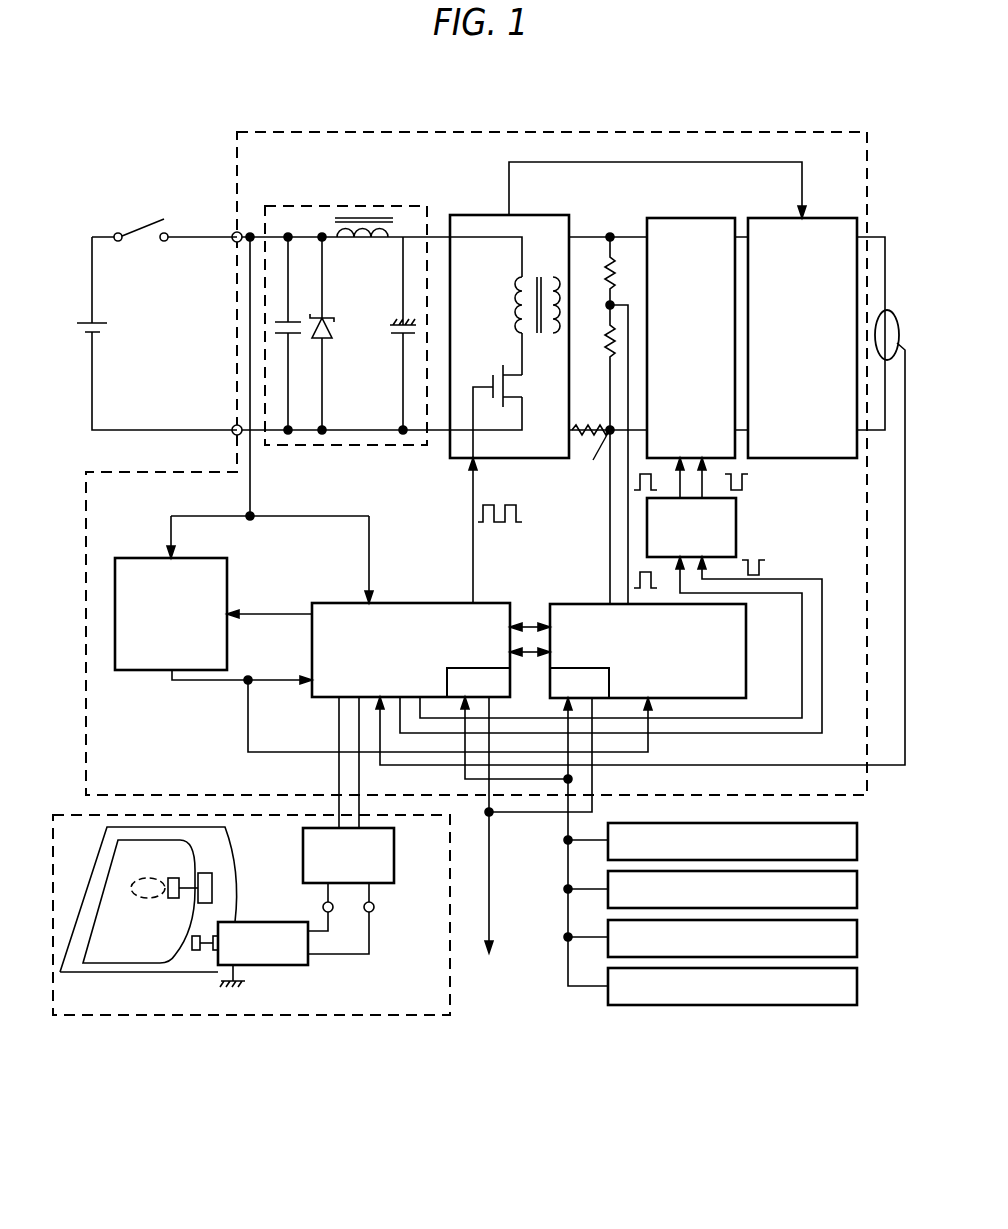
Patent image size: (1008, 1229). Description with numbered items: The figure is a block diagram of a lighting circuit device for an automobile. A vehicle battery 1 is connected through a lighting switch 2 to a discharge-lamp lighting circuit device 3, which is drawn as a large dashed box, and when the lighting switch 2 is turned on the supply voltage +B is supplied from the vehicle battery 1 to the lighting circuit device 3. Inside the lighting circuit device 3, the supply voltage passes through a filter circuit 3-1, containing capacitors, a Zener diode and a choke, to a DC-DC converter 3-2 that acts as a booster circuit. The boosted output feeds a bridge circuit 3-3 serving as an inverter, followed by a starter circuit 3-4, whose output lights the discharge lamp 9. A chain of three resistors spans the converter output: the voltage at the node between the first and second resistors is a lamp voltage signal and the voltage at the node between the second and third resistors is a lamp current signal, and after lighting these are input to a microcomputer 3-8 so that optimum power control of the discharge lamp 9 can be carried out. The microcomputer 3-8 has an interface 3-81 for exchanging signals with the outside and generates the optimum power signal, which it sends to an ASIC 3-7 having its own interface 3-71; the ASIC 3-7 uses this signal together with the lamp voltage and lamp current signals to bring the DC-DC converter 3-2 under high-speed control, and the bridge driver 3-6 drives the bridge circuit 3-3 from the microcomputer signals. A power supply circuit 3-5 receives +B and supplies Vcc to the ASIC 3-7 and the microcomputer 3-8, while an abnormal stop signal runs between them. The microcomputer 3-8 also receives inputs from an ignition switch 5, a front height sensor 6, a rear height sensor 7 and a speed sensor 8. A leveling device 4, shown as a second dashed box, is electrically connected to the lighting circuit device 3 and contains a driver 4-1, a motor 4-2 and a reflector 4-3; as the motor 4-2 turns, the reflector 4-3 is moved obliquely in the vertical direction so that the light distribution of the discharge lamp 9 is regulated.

The vehicle battery 1 is at (100, 323).
The lighting switch 2 is at (153, 220).
The discharge-lamp lighting circuit device 3 is at (635, 132).
The filter circuit 3-1 is at (353, 206).
The DC-DC converter 3-2 is at (490, 215).
The bridge circuit 3-3 is at (692, 218).
The starter circuit 3-4 is at (773, 218).
The power supply circuit 3-5 is at (137, 556).
The bridge driver 3-6 is at (737, 530).
The ASIC 3-7 is at (413, 601).
The interface 3-71 is at (445, 680).
The microcomputer 3-8 is at (572, 602).
The interface 3-81 is at (612, 680).
The leveling device 4 is at (337, 1017).
The driver 4-1 is at (417, 853).
The motor 4-2 is at (257, 920).
The reflector 4-3 is at (197, 863).
The ignition switch 5 is at (857, 842).
The height sensor (front) 6 is at (857, 890).
The height sensor (rear) 7 is at (857, 938).
The speed sensor 8 is at (857, 986).
The discharge lamp 9 is at (888, 323).